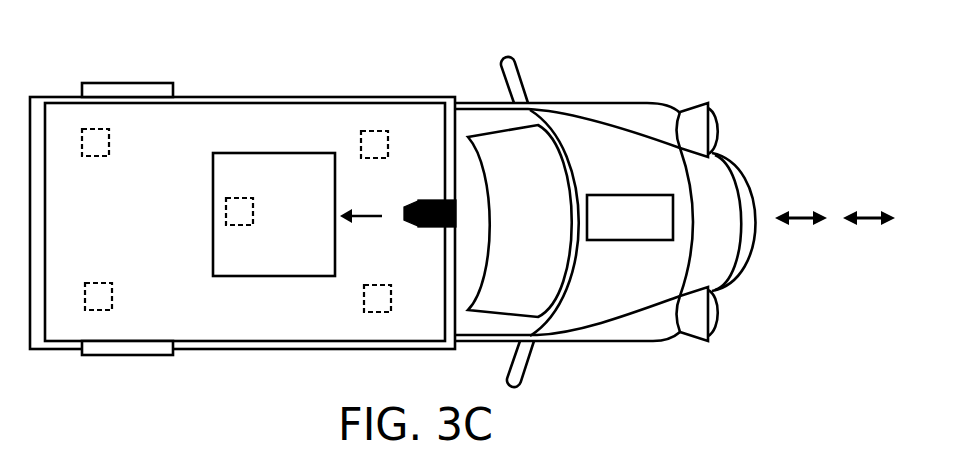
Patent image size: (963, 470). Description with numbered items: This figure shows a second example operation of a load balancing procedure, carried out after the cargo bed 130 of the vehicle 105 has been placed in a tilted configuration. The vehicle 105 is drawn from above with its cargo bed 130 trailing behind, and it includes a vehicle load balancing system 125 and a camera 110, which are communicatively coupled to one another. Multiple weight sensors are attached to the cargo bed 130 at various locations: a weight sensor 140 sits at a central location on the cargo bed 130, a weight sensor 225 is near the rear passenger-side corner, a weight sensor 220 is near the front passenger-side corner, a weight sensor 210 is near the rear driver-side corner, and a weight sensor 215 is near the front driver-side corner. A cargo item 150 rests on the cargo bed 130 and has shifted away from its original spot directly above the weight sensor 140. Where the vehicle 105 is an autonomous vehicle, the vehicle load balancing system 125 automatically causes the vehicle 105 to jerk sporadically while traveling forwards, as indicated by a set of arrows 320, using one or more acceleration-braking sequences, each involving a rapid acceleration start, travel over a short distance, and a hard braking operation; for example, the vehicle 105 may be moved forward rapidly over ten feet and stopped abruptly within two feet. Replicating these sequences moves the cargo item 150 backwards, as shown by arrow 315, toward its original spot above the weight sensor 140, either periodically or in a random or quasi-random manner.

The vehicle 105 is at (678, 77).
The camera 110 is at (425, 200).
The vehicle load balancing system 125 is at (646, 226).
The cargo bed 130 is at (206, 312).
The weight sensor 140 is at (240, 198).
The cargo item 150 is at (268, 153).
The weight sensor 210 is at (100, 156).
The weight sensor 215 is at (374, 131).
The weight sensor 220 is at (380, 285).
The weight sensor 225 is at (98, 283).
The arrow 315 is at (357, 218).
The set of arrows 320 is at (875, 182).